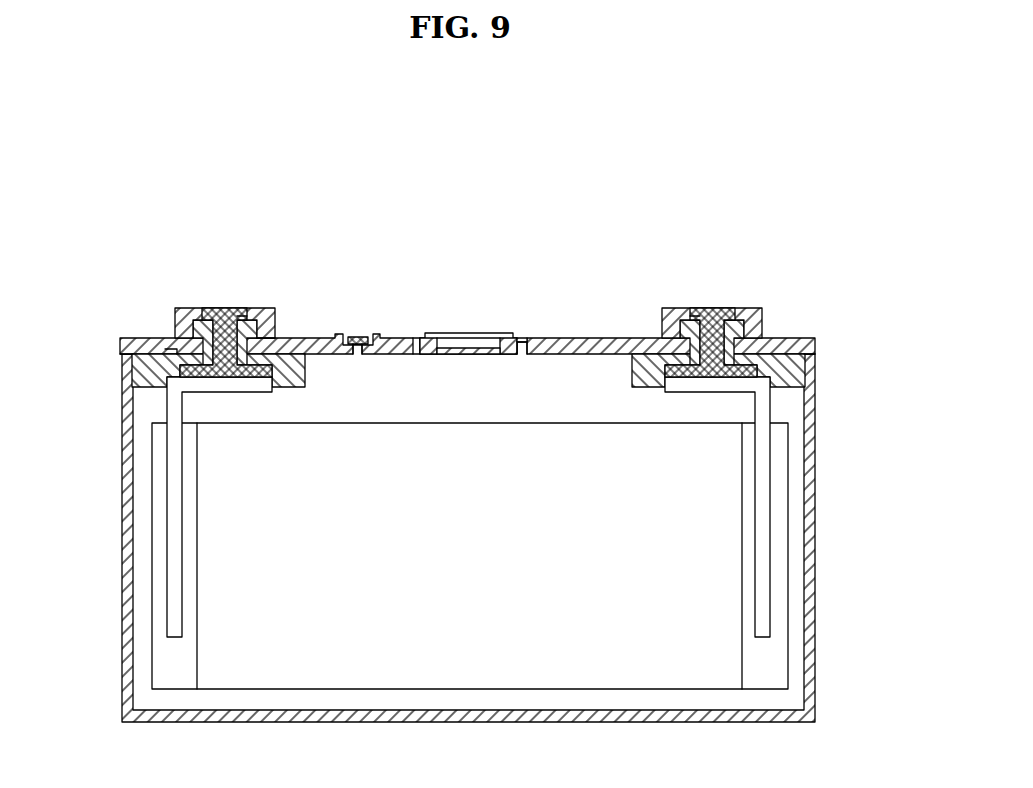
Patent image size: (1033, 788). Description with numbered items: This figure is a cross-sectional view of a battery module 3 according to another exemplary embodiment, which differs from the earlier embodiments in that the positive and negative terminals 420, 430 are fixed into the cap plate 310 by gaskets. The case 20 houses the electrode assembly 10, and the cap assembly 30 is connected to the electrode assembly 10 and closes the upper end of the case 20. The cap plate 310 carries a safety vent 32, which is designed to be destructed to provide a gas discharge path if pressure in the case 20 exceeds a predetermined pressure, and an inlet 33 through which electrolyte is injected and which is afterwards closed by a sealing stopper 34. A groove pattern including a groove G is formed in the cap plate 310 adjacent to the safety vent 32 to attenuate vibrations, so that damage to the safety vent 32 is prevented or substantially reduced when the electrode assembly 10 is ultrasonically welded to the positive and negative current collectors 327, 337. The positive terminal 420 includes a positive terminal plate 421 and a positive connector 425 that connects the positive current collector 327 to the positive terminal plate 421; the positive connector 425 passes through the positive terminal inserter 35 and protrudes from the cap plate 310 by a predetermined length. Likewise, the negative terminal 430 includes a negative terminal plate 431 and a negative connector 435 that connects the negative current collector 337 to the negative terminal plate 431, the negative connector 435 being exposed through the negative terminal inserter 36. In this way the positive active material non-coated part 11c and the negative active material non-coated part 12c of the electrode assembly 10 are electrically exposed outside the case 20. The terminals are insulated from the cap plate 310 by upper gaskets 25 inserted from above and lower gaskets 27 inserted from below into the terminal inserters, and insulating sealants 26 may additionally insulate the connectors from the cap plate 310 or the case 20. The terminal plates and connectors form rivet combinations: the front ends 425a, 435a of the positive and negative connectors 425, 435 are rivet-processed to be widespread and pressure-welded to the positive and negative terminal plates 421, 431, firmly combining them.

The battery module 3 is at (712, 168).
The electrode assembly 10 is at (470, 598).
The positive active material non-coated part 11c is at (172, 670).
The negative active material non-coated part 12c is at (768, 670).
The case 20 is at (812, 648).
The upper gasket 25 is at (180, 323).
The insulating sealant 26 is at (128, 358).
The lower gasket 27 is at (187, 342).
The cap assembly 30 is at (467, 305).
The cap plate 310 is at (568, 345).
The safety vent 32 is at (458, 335).
The inlet 33 is at (357, 356).
The sealing stopper 34 is at (357, 333).
The positive terminal inserter 35 is at (273, 323).
The negative terminal inserter 36 is at (658, 332).
The positive current collector 327 is at (170, 490).
The negative current collector 337 is at (770, 490).
The positive terminal 420 is at (229, 287).
The positive terminal plate 421 is at (190, 310).
The positive connector 425 is at (240, 307).
The front end of positive connector 425a is at (243, 312).
The negative terminal 430 is at (705, 285).
The negative terminal plate 431 is at (745, 308).
The negative connector 435 is at (692, 304).
The front end of negative connector 435a is at (692, 310).
The groove G is at (524, 352).